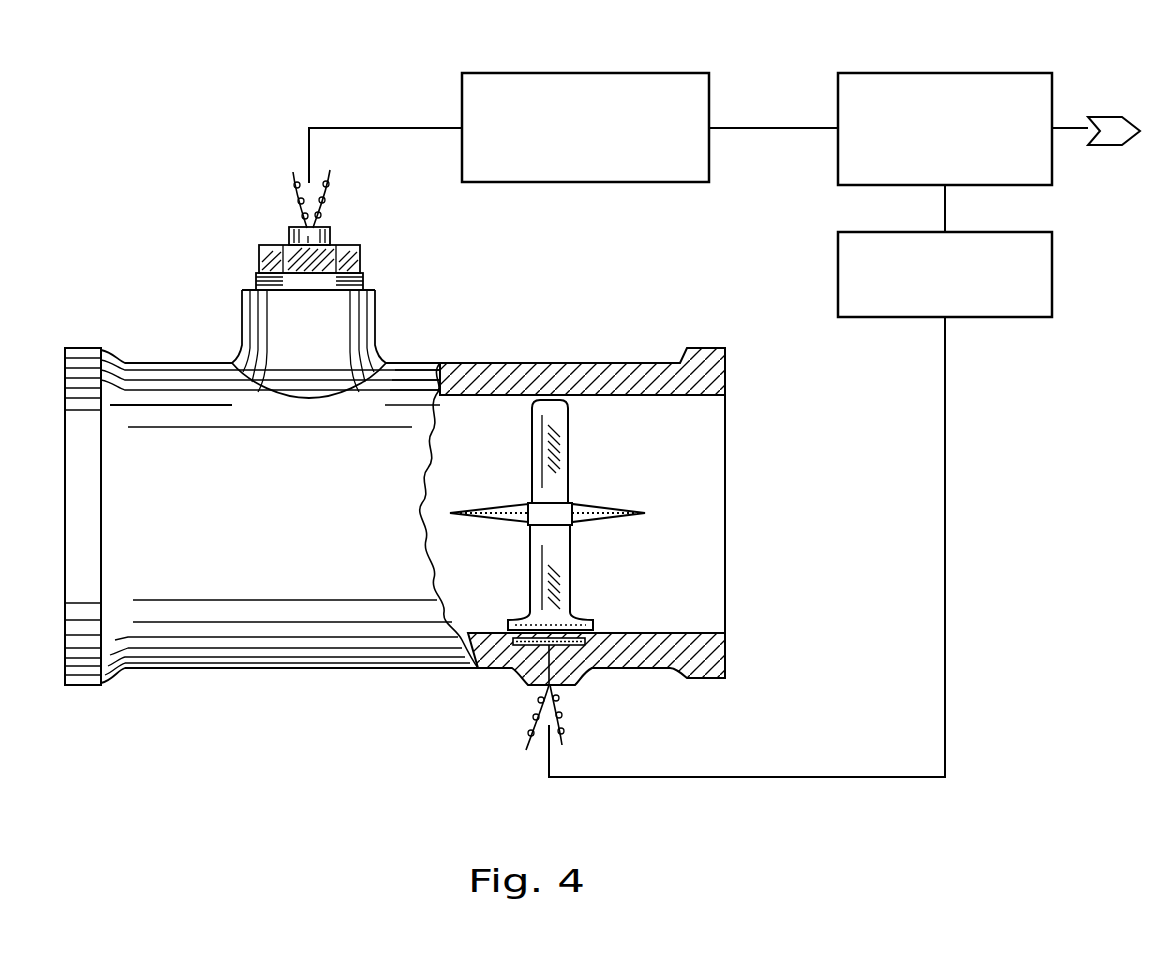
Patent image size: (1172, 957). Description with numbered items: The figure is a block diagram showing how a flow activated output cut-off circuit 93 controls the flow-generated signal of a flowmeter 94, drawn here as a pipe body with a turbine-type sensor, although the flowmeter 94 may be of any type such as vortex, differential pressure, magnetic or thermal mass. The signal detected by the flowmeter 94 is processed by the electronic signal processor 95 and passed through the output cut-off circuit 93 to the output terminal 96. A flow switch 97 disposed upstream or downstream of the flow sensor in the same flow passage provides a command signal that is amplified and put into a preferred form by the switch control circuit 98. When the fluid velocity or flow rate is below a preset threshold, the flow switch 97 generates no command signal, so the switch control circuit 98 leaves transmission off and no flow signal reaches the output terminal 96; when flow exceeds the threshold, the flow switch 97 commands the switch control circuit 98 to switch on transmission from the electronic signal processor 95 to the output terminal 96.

The flow activated output cut-off circuit 93 is at (945, 73).
The flowmeter 94 is at (158, 360).
The electronic signal processor 95 is at (593, 73).
The output terminal 96 is at (1112, 110).
The flow switch 97 is at (603, 623).
The switch control circuit 98 is at (1052, 272).